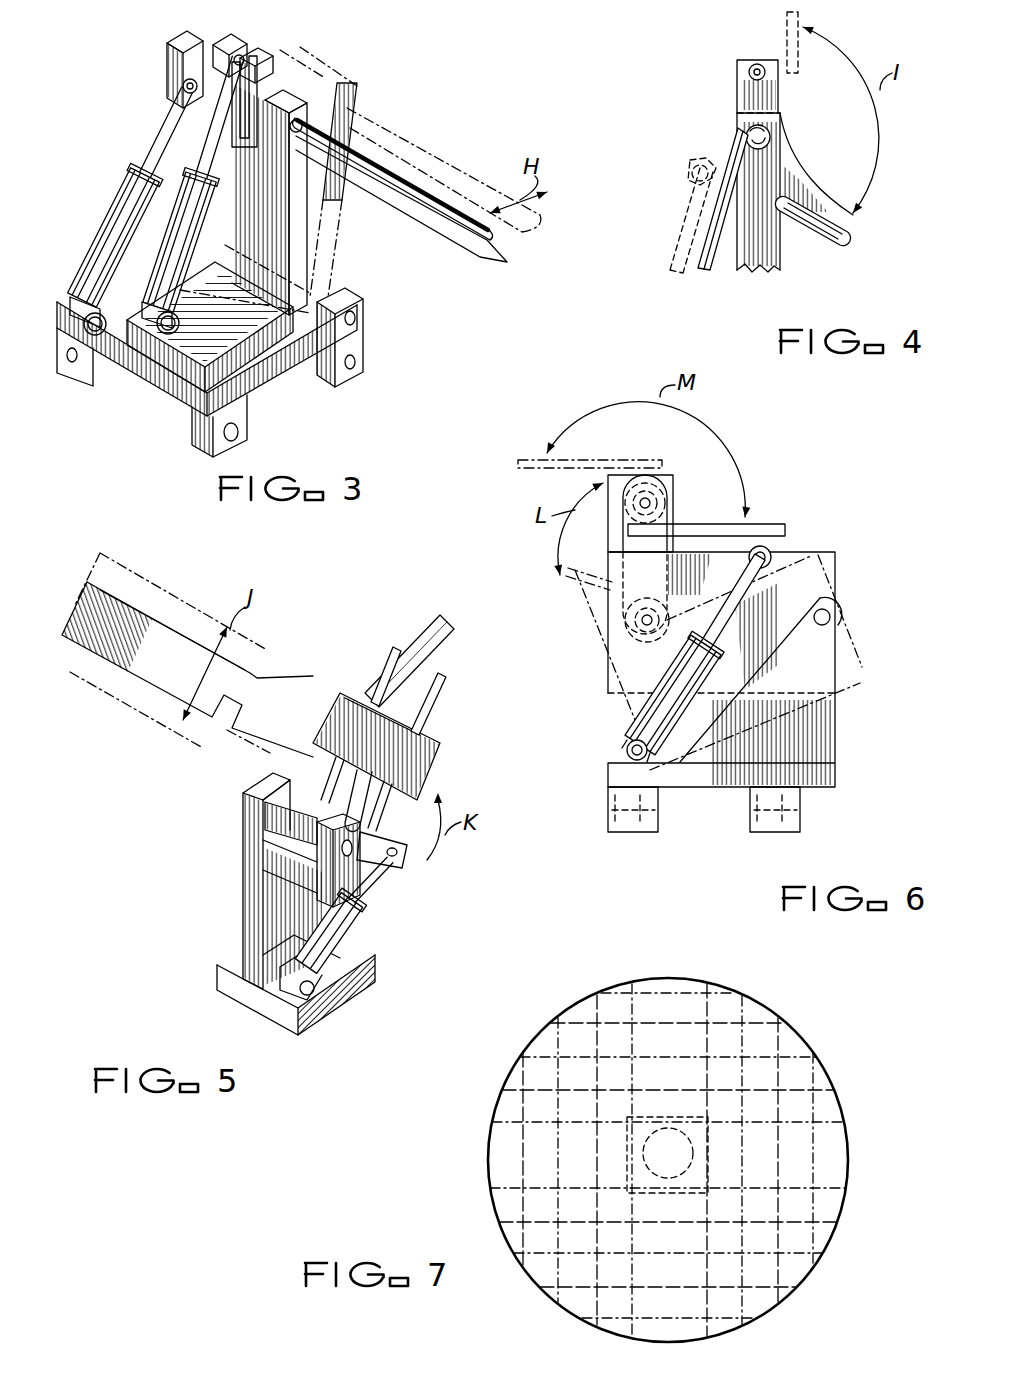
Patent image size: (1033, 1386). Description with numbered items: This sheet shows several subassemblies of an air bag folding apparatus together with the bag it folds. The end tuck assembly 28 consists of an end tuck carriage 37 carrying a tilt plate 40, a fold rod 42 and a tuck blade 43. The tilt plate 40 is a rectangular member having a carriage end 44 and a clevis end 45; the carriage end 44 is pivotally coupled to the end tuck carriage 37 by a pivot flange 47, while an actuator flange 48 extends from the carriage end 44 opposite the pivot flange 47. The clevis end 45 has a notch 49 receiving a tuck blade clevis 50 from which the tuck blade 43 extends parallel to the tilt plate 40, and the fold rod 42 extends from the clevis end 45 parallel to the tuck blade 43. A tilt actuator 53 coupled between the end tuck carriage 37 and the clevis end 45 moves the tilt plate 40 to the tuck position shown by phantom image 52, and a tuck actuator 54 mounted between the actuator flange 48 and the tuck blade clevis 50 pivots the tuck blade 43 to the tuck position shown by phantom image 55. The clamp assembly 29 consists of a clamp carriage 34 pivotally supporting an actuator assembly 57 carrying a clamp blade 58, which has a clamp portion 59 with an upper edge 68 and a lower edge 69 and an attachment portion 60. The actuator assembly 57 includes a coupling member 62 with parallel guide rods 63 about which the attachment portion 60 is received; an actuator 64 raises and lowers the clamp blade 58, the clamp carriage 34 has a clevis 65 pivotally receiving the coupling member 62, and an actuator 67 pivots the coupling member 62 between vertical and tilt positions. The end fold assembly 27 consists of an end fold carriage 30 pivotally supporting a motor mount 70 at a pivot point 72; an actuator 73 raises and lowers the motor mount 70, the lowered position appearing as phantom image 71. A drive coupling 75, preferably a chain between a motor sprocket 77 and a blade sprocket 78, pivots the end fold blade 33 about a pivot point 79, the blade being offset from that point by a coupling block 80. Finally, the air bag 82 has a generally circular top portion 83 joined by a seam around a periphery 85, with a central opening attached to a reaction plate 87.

In FIG. 6, the end fold assembly 27 is at (832, 540).
In FIG. 3, the end tuck assembly 28 is at (140, 105).
In FIG. 5, the clamp assembly 29 is at (217, 820).
In FIG. 6, the end fold carriage 30 is at (618, 773).
In FIG. 6, the end fold blade 33 is at (683, 520).
In FIG. 5, the clamp carriage 34 is at (380, 970).
In FIG. 3, the end tuck carriage 37 is at (163, 397).
In FIG. 3, the tilt plate 40 is at (313, 227).
In FIG. 4, the tilt plate 40 is at (777, 250).
In FIG. 3, the fold rod 42 is at (493, 240).
In FIG. 4, the fold rod 42 is at (753, 130).
In FIG. 3, the tuck blade 43 is at (443, 237).
In FIG. 4, the tuck blade 43 is at (813, 200).
In FIG. 3, the carriage end 44 is at (253, 305).
In FIG. 3, the clevis end 45 is at (347, 102).
In FIG. 3, the pivot flange 47 is at (333, 287).
In FIG. 3, the actuator flange 48 is at (210, 327).
In FIG. 3, the notch 49 is at (240, 140).
In FIG. 3, the tuck blade clevis 50 is at (270, 47).
In FIG. 3, the phantom image 52 is at (333, 197).
In FIG. 3, the tilt actuator 53 is at (112, 207).
In FIG. 3, the tuck actuator 54 is at (197, 233).
In FIG. 4, the phantom image 55 is at (786, 28).
In FIG. 5, the actuator assembly 57 is at (412, 720).
In FIG. 5, the clamp blade 58 is at (187, 643).
In FIG. 5, the clamp portion 59 is at (173, 620).
In FIG. 5, the attachment portion 60 is at (350, 700).
In FIG. 5, the coupling member 62 is at (380, 880).
In FIG. 5, the guide rods 63 is at (397, 650).
In FIG. 5, the actuator 64 is at (450, 630).
In FIG. 5, the clevis 65 is at (250, 860).
In FIG. 5, the actuator 67 is at (357, 927).
In FIG. 5, the upper edge 68 is at (147, 580).
In FIG. 5, the lower edge 69 is at (97, 667).
In FIG. 6, the motor mount 70 is at (835, 577).
In FIG. 6, the phantom image 71 is at (590, 628).
In FIG. 6, the pivot point 72 is at (835, 603).
In FIG. 6, the actuator 73 is at (637, 720).
In FIG. 6, the drive coupling 75 is at (667, 563).
In FIG. 6, the motor sprocket 77 is at (633, 635).
In FIG. 6, the blade sprocket 78 is at (650, 490).
In FIG. 6, the pivot point 79 is at (670, 503).
In FIG. 6, the coupling block 80 is at (590, 525).
In FIG. 7, the air bag 82 is at (487, 1140).
In FIG. 7, the top portion 83 is at (523, 1105).
In FIG. 7, the periphery 85 is at (555, 1018).
In FIG. 7, the reaction plate 87 is at (680, 1120).